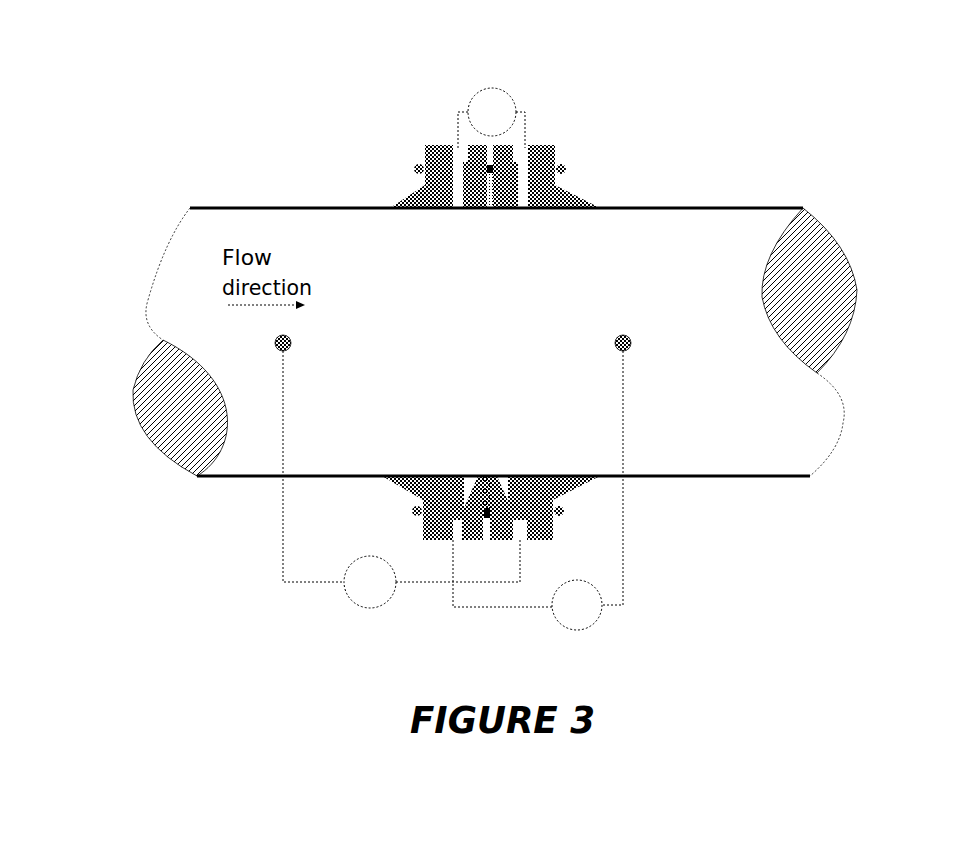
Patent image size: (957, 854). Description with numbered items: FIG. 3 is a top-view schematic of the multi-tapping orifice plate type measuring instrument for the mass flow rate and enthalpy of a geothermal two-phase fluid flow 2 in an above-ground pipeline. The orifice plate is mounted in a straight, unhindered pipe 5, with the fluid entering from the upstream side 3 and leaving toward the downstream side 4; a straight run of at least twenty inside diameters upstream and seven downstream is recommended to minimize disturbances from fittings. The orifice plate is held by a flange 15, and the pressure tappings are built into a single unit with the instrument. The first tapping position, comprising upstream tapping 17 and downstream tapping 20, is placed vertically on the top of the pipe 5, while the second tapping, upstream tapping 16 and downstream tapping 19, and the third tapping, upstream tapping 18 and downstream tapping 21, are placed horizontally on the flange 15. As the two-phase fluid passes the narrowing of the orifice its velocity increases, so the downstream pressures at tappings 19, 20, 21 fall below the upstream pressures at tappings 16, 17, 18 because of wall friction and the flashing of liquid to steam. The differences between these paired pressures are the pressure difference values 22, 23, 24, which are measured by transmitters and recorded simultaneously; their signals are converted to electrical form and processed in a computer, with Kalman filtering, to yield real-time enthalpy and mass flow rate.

The two-phase fluid flow 2 is at (212, 270).
The upstream side 3 is at (253, 183).
The downstream side 4 is at (748, 188).
The pipe 5 is at (748, 442).
The flange 15 is at (432, 187).
The second upstream pressure tapping 16 is at (453, 148).
The first upstream pressure tapping 17 is at (275, 343).
The third upstream pressure tapping 18 is at (453, 522).
The second downstream pressure tapping 19 is at (528, 147).
The first downstream pressure tapping 20 is at (631, 343).
The third downstream pressure tapping 21 is at (523, 522).
The first pressure difference 22 is at (515, 90).
The second pressure difference 23 is at (348, 597).
The third pressure difference 24 is at (603, 610).